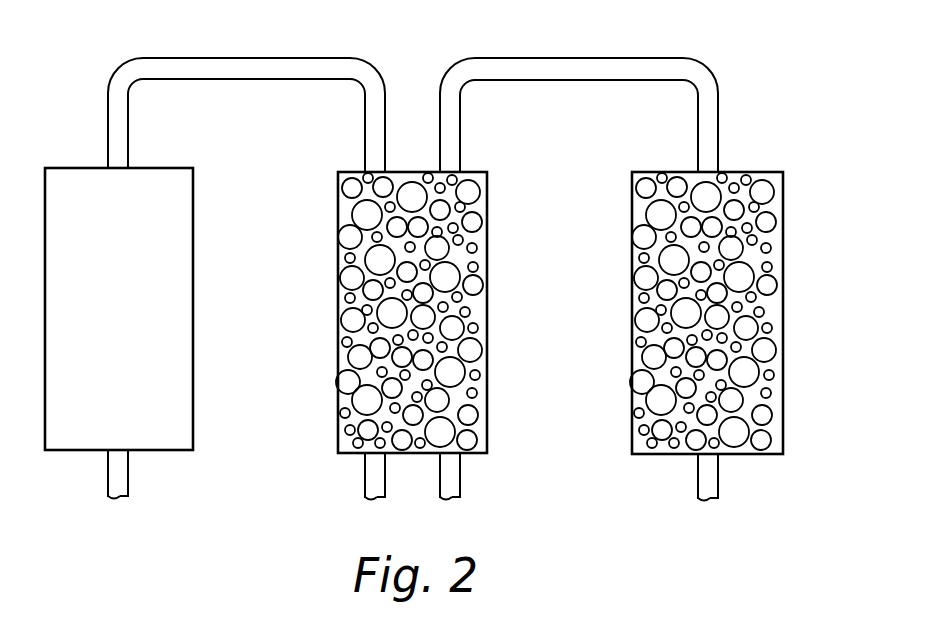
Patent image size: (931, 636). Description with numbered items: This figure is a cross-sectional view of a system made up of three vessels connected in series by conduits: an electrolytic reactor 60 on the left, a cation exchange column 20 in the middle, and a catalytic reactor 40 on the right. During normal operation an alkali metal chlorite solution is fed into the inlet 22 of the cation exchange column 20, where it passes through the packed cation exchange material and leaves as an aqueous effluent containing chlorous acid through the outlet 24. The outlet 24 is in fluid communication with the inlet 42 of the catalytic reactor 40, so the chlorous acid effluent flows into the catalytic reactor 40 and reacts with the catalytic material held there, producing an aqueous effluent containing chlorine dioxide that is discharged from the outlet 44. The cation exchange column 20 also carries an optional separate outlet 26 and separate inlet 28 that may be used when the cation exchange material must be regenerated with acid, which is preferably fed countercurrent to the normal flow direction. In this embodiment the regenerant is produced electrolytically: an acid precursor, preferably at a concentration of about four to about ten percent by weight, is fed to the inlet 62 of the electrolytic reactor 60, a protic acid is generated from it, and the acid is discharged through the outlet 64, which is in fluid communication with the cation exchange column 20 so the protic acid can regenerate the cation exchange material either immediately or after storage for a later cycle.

The cation exchange column 20 is at (505, 330).
The inlet 22 is at (460, 464).
The outlet 24 is at (460, 160).
The separate outlet 26 is at (365, 143).
The separate inlet 28 is at (365, 463).
The catalytic reactor 40 is at (805, 265).
The inlet 42 is at (718, 160).
The outlet 44 is at (718, 477).
The electrolytic reactor 60 is at (208, 257).
The inlet 62 is at (108, 467).
The outlet 64 is at (108, 153).